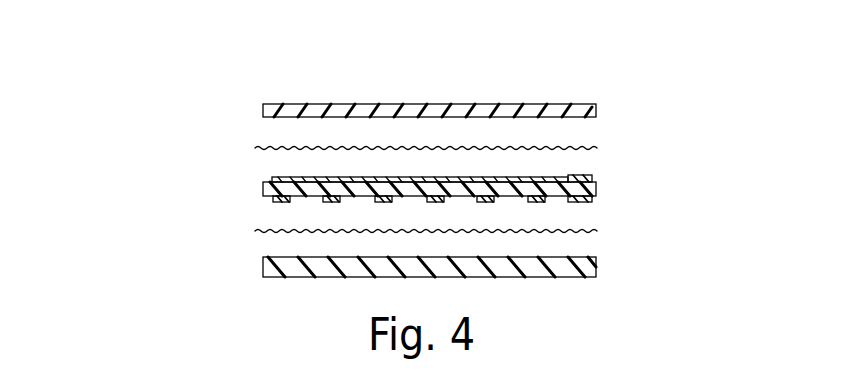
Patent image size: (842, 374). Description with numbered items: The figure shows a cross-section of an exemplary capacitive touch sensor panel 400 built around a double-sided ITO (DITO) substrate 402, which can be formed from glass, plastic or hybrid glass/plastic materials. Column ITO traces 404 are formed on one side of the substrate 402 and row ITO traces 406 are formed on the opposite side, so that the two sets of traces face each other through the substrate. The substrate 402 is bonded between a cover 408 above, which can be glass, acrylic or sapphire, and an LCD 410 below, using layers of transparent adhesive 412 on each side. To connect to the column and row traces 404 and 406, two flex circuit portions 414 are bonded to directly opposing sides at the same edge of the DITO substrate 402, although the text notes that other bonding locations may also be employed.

The capacitive touch sensor panel 400 is at (97, 228).
The double-sided ITO (DITO) substrate 402 is at (263, 190).
The column ITO traces 404 is at (312, 178).
The row ITO traces 406 is at (331, 204).
The cover 408 is at (598, 110).
The LCD 410 is at (598, 263).
The transparent adhesive 412 is at (266, 231).
The flex circuit portions 414 is at (594, 178).